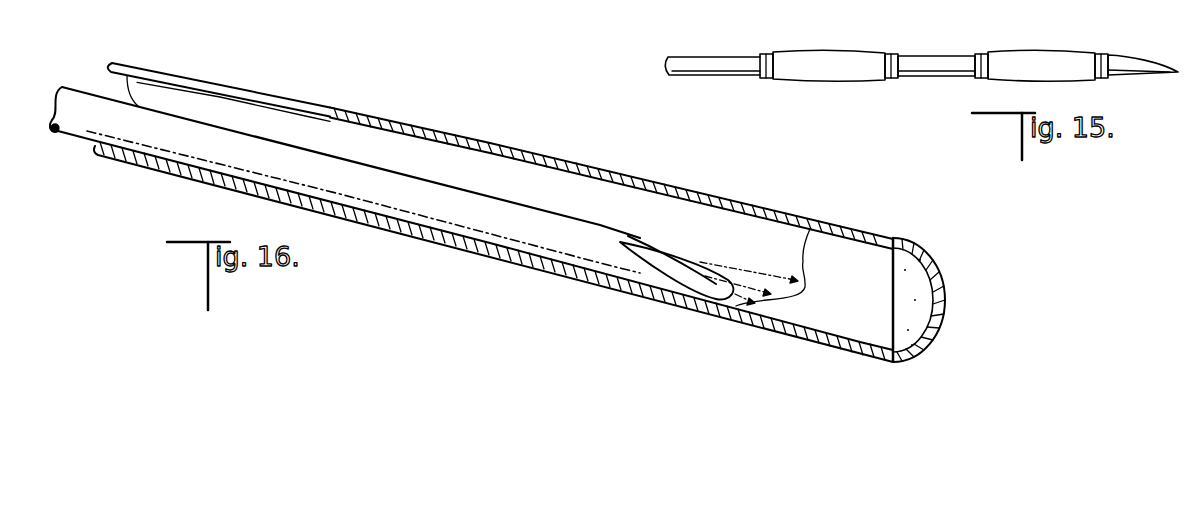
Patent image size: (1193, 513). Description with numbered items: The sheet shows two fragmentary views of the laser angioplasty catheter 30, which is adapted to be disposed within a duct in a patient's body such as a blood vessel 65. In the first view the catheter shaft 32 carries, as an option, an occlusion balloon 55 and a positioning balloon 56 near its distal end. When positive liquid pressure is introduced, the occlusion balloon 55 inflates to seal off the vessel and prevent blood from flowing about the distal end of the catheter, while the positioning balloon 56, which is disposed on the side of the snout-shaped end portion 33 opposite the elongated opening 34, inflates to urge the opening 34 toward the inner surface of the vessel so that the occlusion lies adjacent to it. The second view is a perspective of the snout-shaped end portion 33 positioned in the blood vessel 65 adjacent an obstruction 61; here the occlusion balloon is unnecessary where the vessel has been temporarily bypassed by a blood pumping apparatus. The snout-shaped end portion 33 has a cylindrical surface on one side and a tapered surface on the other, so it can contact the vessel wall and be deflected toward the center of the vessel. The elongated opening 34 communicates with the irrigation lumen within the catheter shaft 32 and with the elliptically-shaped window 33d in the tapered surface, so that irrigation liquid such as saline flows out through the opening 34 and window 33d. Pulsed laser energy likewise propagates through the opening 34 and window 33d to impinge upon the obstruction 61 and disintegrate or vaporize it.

In FIG. 16, the laser angioplasty catheter 30 is at (463, 128).
In FIG. 15, the laser angioplasty catheter 30 is at (912, 87).
In FIG. 16, the blood vessel 65 is at (237, 100).
In FIG. 16, the catheter shaft 32 is at (160, 150).
In FIG. 16, the snout-shaped end portion 33 is at (721, 290).
In FIG. 15, the snout-shaped end portion 33 is at (1192, 50).
In FIG. 16, the elliptically-shaped window 33d is at (647, 239).
In FIG. 16, the elongated opening 34 is at (675, 265).
In FIG. 16, the obstruction 61 is at (836, 322).
In FIG. 15, the occlusion balloon 55 is at (818, 80).
In FIG. 15, the positioning balloon 56 is at (1058, 51).